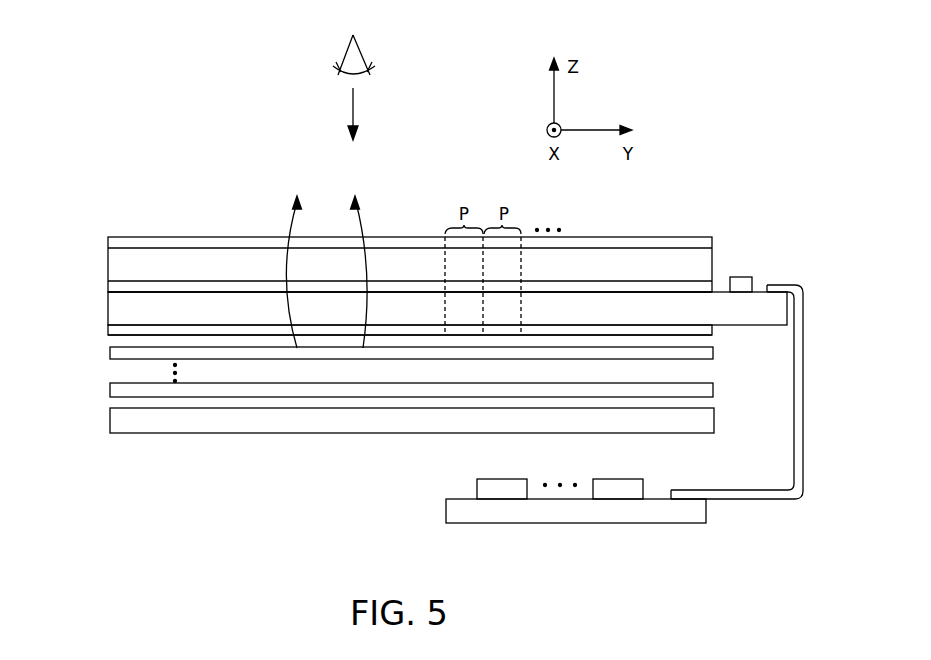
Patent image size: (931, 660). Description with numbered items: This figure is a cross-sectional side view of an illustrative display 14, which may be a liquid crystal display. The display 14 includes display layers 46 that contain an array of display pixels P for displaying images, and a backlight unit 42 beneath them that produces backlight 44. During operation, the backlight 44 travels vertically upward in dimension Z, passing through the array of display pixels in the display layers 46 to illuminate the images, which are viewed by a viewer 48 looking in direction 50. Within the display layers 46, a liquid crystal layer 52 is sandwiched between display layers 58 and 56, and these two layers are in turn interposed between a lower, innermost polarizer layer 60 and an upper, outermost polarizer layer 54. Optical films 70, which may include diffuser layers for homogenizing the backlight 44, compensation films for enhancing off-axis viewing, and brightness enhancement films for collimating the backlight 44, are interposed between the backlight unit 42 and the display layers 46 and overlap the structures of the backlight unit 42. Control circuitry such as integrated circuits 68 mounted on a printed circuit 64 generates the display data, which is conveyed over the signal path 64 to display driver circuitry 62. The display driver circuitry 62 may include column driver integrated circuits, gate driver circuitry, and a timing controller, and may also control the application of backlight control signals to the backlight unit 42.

The display 14 is at (708, 58).
The backlight unit 42 is at (112, 418).
The backlight 44 is at (362, 226).
The display layers 46 is at (70, 235).
The viewer 48 is at (361, 52).
The direction 50 is at (353, 112).
The liquid crystal layer 52 is at (188, 287).
The upper polarizer layer 54 is at (154, 243).
The display layer 56 is at (122, 263).
The display layer 58 is at (122, 302).
The lower polarizer layer 60 is at (122, 334).
The display driver circuitry 62 is at (741, 277).
The printed circuit 64 is at (522, 518).
The integrated circuits 68 is at (527, 484).
The optical films 70 is at (722, 345).